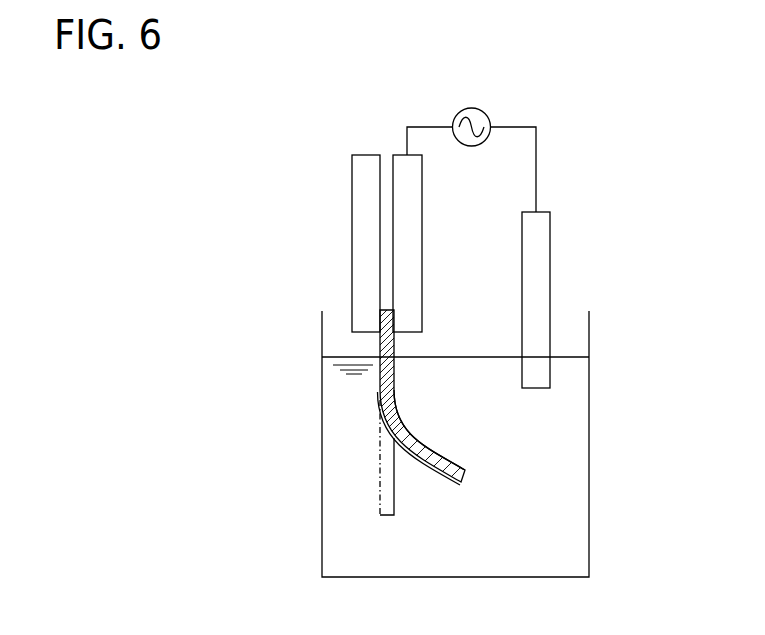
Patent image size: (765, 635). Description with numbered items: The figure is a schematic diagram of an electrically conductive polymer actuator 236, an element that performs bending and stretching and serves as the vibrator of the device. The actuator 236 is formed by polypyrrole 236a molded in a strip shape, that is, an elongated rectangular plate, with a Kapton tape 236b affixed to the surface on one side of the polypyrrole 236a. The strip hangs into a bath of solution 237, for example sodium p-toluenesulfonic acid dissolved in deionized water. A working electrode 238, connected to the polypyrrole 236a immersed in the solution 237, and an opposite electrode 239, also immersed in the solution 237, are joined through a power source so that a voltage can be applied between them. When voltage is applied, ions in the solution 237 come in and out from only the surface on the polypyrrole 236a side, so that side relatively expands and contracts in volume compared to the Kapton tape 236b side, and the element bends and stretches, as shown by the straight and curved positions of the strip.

The electrically conductive polymer actuator 236 is at (410, 400).
The polypyrrole 236a is at (408, 433).
The Kapton tape 236b is at (423, 471).
The solution 237 is at (503, 364).
The working electrode 238 is at (422, 227).
The opposite electrode 239 is at (551, 244).